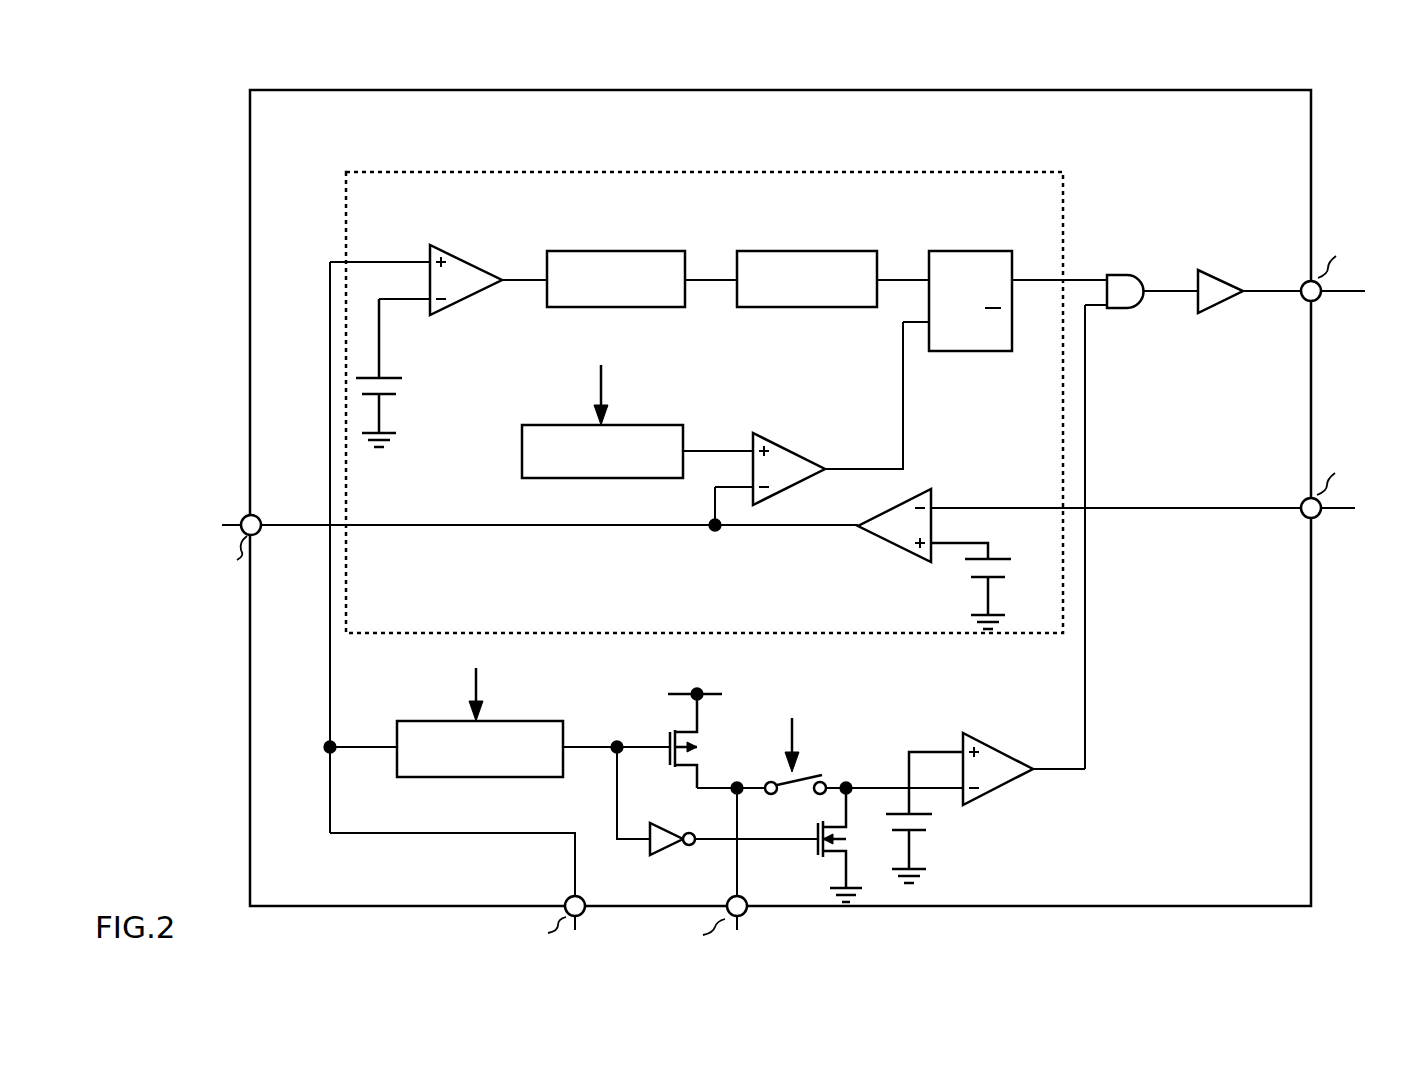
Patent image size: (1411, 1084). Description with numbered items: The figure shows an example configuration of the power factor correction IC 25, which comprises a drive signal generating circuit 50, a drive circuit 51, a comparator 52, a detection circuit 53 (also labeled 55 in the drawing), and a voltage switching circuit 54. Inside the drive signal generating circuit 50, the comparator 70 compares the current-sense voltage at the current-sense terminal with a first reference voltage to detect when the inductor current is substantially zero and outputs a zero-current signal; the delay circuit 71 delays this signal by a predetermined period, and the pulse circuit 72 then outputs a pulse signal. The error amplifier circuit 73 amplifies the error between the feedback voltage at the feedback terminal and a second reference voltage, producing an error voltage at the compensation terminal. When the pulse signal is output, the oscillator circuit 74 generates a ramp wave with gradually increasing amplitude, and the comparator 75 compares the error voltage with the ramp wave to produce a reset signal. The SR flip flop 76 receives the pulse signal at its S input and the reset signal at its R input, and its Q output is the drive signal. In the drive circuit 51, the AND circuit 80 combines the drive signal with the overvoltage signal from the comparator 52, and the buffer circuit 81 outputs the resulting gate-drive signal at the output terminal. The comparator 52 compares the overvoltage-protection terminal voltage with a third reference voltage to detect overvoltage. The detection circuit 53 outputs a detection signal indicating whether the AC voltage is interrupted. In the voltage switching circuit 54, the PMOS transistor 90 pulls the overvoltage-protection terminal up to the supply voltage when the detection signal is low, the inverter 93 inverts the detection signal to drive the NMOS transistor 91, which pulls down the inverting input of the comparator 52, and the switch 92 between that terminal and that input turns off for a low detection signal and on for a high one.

The power factor correction IC 25 is at (1032, 90).
The drive signal generating circuit 50 is at (1037, 172).
The drive circuit 51 is at (1169, 226).
The comparator 52 is at (986, 739).
The detection circuit 53 is at (480, 716).
The detection circuit 55 is at (397, 721).
The voltage switching circuit 54 is at (879, 722).
The comparator 70 is at (487, 277).
The delay circuit 71 is at (644, 251).
The pulse circuit 72 is at (737, 251).
The error amplifier circuit 73 is at (890, 548).
The oscillator circuit 74 is at (524, 425).
The comparator 75 is at (770, 433).
The SR flip flop 76 is at (929, 251).
The AND circuit 80 is at (1128, 275).
The buffer circuit 81 is at (1214, 273).
The PMOS transistor 90 is at (672, 764).
The NMOS transistor 91 is at (824, 858).
The switch 92 is at (814, 775).
The inverter 93 is at (650, 852).